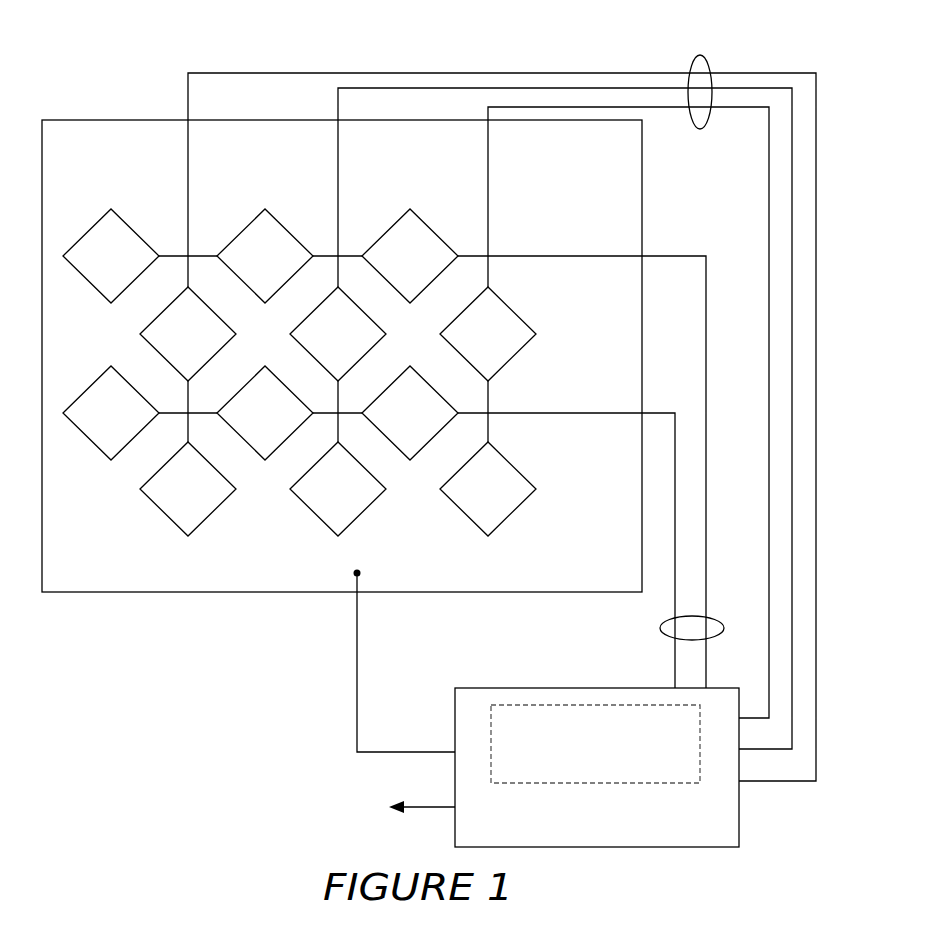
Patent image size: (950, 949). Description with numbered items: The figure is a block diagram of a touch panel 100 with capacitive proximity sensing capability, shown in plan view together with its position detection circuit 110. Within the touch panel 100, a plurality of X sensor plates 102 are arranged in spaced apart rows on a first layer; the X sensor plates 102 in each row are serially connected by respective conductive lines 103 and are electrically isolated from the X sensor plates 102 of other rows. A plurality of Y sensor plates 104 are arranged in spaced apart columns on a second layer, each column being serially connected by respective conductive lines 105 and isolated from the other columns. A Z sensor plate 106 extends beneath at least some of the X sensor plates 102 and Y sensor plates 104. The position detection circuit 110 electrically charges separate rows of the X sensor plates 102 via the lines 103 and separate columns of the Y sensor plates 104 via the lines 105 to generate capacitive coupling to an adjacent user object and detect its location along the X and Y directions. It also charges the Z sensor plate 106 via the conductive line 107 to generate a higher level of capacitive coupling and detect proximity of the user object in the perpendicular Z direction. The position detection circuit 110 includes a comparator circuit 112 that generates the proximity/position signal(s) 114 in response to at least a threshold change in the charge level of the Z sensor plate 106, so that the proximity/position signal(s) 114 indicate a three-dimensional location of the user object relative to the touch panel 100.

The touch panel 100 is at (142, 92).
The X sensor plates 102 is at (425, 441).
The conductive lines 103 is at (663, 634).
The Y sensor plates 104 is at (503, 517).
The conductive lines 105 is at (706, 63).
The Z sensor plate 106 is at (398, 582).
The conductive line 107 is at (357, 714).
The position detection circuit 110 is at (701, 841).
The comparator circuit 112 is at (579, 767).
The proximity/position signal(s) 114 is at (437, 807).